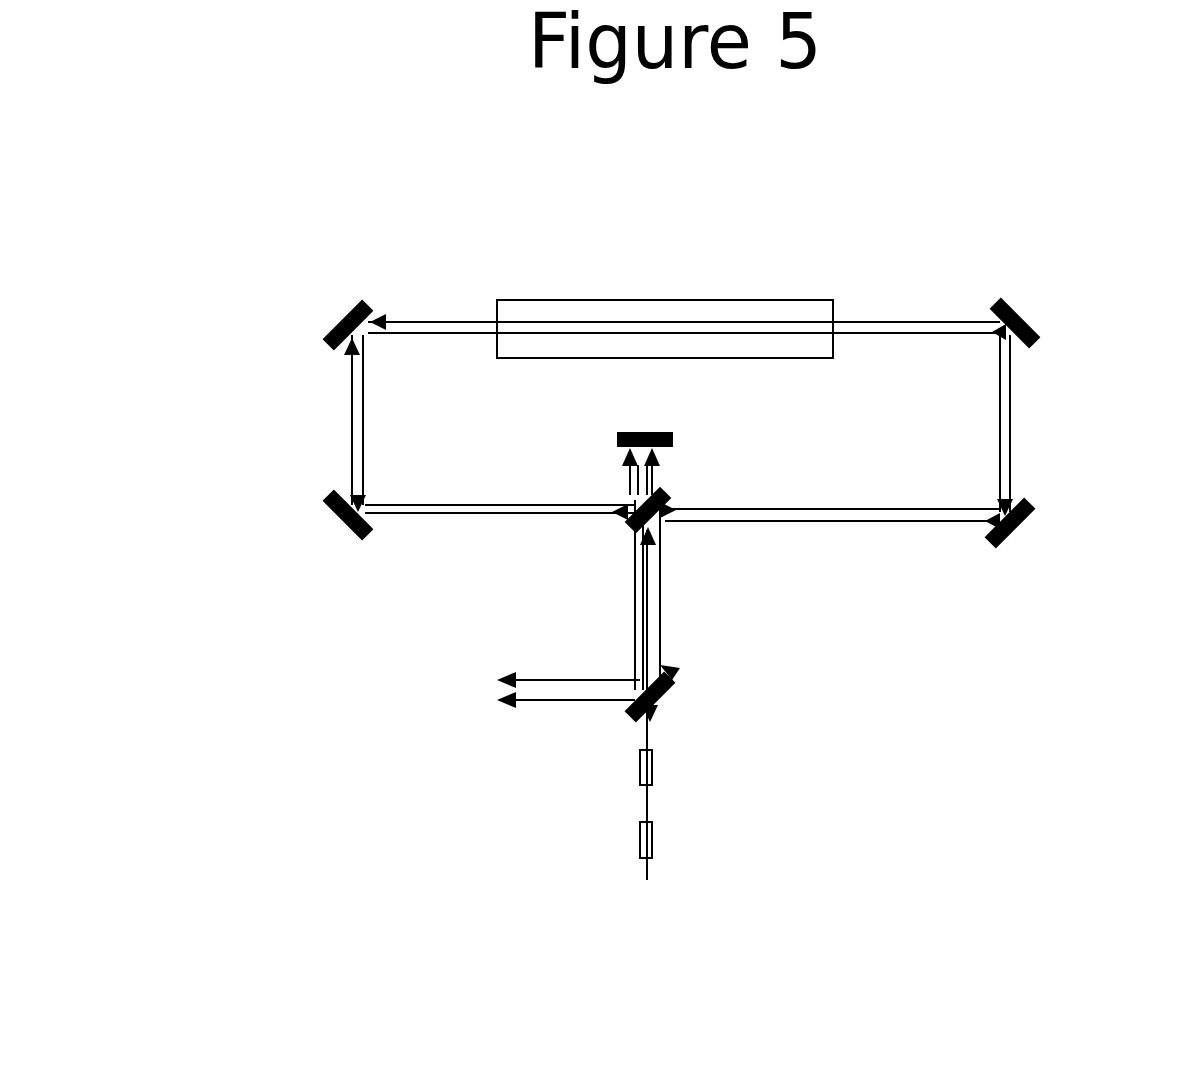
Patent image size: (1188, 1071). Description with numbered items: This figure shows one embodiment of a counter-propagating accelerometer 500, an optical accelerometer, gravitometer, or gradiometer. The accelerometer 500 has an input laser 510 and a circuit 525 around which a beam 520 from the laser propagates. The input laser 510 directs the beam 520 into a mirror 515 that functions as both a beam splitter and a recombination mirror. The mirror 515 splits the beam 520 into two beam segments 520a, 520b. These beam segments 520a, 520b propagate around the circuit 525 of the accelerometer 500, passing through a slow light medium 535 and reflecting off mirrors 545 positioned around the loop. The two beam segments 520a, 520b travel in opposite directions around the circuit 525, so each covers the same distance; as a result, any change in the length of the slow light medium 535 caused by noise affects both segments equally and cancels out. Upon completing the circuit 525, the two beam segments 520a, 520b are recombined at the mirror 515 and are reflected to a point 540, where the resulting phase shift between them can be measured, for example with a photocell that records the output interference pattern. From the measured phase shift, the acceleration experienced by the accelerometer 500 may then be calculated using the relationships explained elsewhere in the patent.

The counter-propagating accelerometer 500 is at (320, 285).
The input laser 510 is at (665, 852).
The mirror 515 is at (665, 692).
The beam 520 is at (652, 645).
The beam segment 520a is at (1060, 424).
The beam segment 520b is at (1010, 368).
The circuit 525 is at (449, 488).
The slow light medium 535 is at (641, 310).
The point 540 is at (484, 673).
The mirrors 545 is at (345, 320).